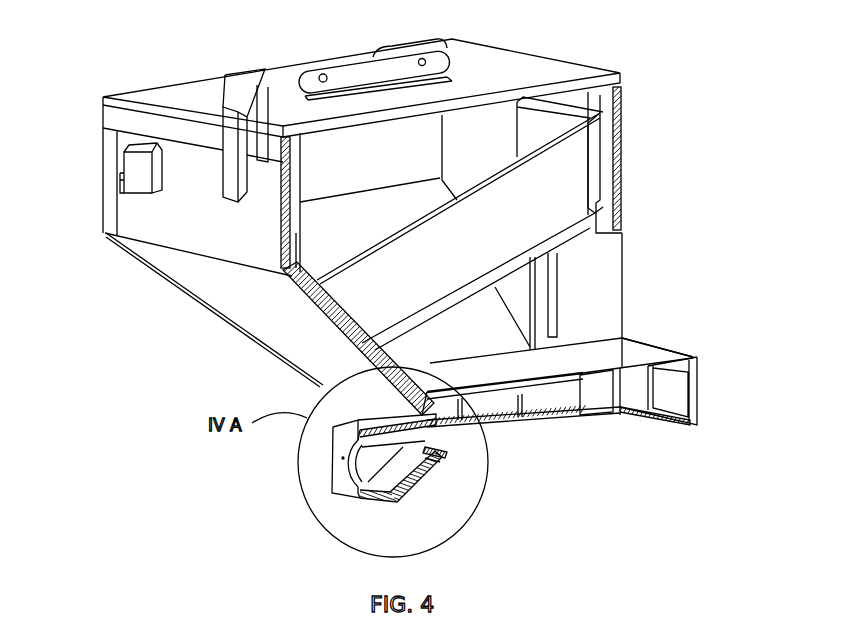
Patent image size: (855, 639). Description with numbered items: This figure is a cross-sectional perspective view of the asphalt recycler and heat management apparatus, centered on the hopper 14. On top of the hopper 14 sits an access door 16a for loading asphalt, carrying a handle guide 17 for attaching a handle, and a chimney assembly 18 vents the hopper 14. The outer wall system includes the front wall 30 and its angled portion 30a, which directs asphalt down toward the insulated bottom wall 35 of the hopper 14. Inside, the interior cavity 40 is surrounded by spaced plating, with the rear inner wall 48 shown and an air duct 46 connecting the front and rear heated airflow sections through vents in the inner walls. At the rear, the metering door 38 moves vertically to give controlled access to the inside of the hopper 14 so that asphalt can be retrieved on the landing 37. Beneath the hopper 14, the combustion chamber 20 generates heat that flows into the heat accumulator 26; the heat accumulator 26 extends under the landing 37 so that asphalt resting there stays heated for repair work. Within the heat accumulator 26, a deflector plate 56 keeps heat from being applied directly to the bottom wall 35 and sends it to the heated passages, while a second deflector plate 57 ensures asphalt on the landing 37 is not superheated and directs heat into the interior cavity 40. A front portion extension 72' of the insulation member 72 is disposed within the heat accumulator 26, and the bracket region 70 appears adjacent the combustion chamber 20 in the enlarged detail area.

The hopper 14 is at (103, 72).
The access door 16a is at (540, 62).
The handle guide 17 is at (335, 53).
The chimney assembly 18 is at (232, 168).
The combustion chamber 20 is at (370, 462).
The heat accumulator 26 is at (698, 412).
The front wall 30 is at (222, 232).
The angled portion 30a is at (282, 321).
The bottom wall 35 is at (570, 356).
The landing 37 is at (653, 350).
The metering door 38 is at (599, 301).
The interior cavity 40 is at (369, 163).
The air duct 46 is at (466, 252).
The rear inner wall 48 is at (481, 148).
The deflector plate 56 is at (545, 395).
The deflector plate 57 is at (600, 410).
The bracket plate 70 is at (332, 483).
The insulation member 72 is at (401, 482).
The front portion extension 72' is at (458, 470).